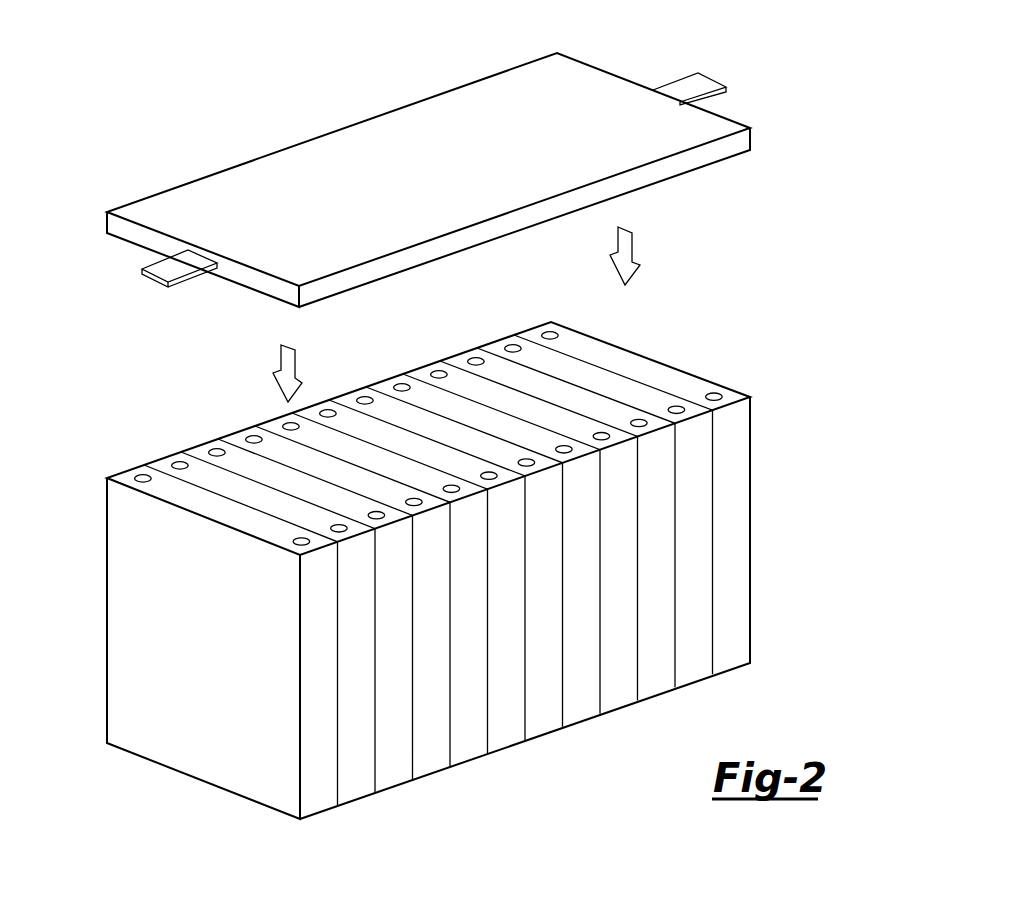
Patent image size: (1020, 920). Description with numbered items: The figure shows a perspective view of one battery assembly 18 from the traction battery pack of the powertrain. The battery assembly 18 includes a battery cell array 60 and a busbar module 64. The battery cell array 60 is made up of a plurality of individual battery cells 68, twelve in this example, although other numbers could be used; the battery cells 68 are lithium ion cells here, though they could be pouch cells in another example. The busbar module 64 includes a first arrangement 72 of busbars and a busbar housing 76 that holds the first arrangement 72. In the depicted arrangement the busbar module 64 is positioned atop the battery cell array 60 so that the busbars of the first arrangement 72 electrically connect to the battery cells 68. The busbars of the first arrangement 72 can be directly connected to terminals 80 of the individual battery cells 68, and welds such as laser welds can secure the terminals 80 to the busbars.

The battery assembly 18 is at (784, 203).
The battery cell array 60 is at (778, 555).
The busbar module 64 is at (398, 156).
The battery cell 68 is at (363, 738).
The first arrangement of busbars 72 is at (160, 268).
The busbar housing 76 is at (362, 148).
The terminal 80 is at (404, 385).